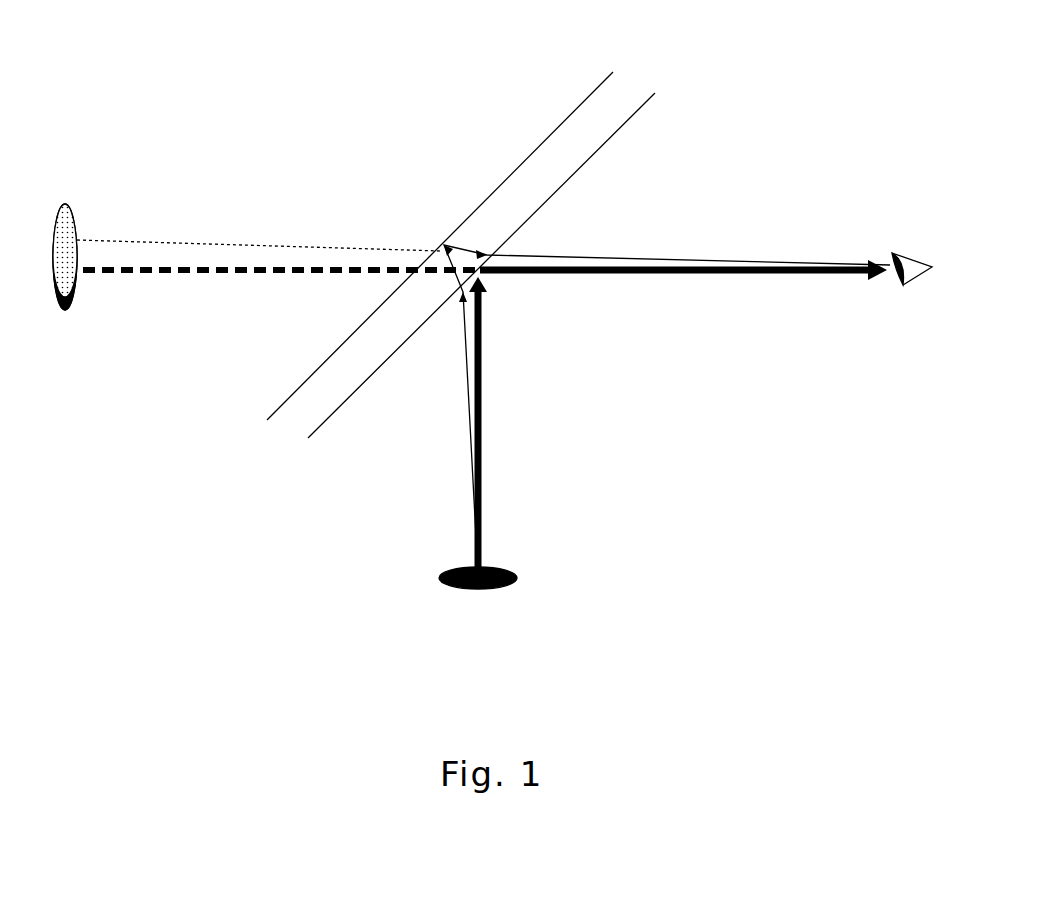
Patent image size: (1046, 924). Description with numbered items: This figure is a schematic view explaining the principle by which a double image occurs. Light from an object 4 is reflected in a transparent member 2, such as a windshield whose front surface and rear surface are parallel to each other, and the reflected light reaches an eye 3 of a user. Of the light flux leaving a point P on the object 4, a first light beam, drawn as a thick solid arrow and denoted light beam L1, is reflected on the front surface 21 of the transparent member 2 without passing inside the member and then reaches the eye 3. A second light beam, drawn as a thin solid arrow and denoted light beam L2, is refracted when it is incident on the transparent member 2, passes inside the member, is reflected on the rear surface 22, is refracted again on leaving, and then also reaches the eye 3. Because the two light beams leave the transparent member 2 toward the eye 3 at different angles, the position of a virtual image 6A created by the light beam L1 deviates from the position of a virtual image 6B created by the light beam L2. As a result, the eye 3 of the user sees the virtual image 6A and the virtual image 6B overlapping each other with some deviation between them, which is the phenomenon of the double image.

The transparent member 2 is at (481, 228).
The front surface 21 is at (617, 128).
The rear surface 22 is at (577, 108).
The eye 3 is at (917, 252).
The object 4 is at (517, 578).
The virtual image 6A is at (65, 310).
The virtual image 6B is at (65, 205).
The light beam L1 is at (482, 402).
The light beam L2 is at (468, 413).
The point P is at (479, 572).